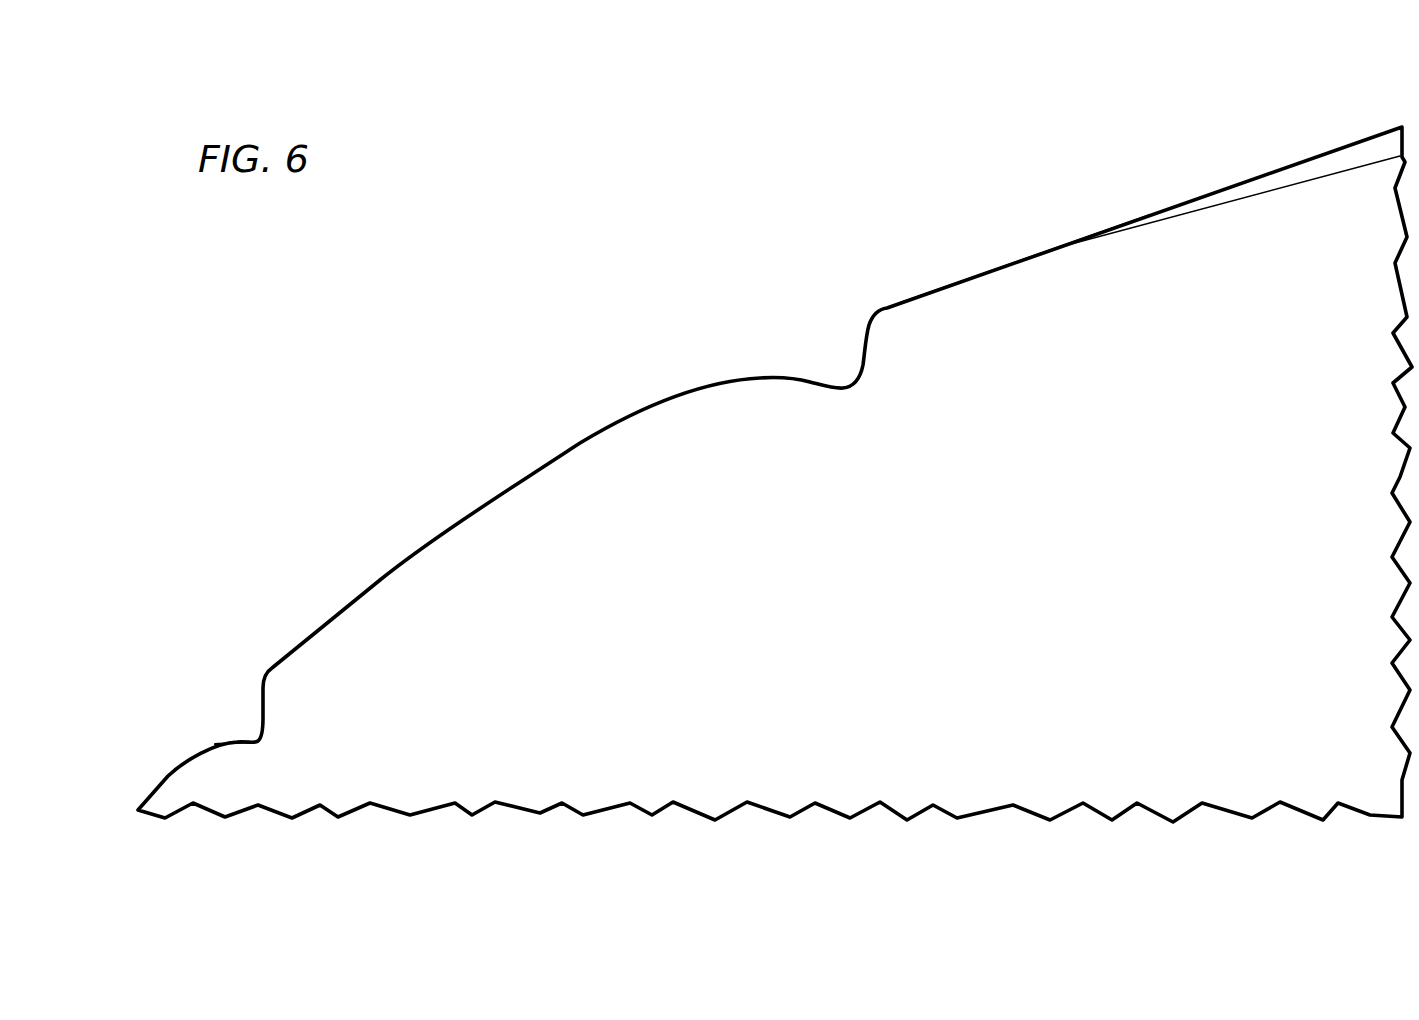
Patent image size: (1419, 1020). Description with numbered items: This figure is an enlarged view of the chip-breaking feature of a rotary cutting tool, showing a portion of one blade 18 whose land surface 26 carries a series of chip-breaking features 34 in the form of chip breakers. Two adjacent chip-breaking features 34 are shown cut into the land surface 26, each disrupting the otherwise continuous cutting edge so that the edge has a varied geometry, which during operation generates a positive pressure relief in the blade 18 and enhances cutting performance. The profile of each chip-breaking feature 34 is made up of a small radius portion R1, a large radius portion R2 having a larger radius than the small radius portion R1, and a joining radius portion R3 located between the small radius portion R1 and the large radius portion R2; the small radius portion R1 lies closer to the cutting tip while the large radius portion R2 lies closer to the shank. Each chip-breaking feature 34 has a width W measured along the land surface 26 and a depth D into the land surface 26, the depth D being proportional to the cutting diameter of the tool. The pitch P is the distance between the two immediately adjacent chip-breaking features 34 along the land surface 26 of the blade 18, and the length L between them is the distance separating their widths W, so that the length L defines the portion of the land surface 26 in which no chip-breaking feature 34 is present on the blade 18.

The blade 18 is at (1148, 138).
The land surface 26 is at (1150, 213).
The chip-breaking feature 34 is at (843, 378).
The pitch P is at (777, 237).
The length L is at (658, 400).
The width W is at (248, 638).
The depth D is at (975, 348).
The small radius portion R1 is at (870, 346).
The large radius portion R2 is at (782, 386).
The joining radius portion R3 is at (856, 391).